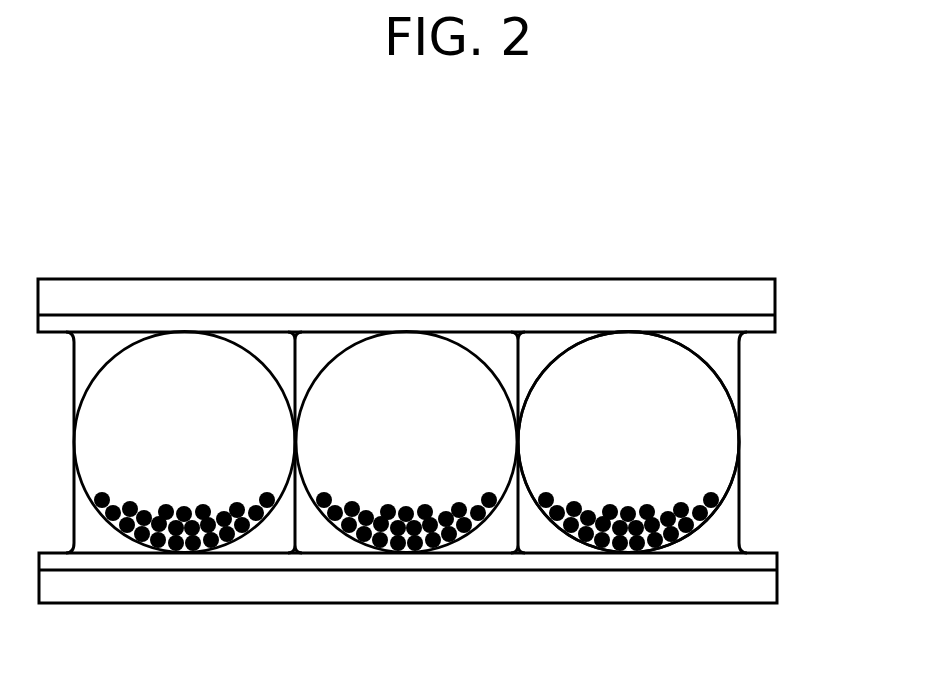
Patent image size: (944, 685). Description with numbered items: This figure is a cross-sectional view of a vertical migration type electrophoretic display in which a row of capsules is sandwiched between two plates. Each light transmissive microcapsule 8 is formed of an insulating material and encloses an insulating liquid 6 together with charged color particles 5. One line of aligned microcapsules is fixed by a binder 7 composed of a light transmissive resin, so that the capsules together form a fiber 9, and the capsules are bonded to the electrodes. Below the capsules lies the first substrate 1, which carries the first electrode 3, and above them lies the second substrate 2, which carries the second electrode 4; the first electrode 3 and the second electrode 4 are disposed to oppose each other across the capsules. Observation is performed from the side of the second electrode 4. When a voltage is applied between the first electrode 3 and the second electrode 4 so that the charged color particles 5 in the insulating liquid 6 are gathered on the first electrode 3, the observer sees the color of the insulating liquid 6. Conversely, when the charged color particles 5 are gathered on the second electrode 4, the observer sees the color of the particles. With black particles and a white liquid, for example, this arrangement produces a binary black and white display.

The first substrate 1 is at (742, 598).
The second substrate 2 is at (740, 290).
The first electrode 3 is at (768, 563).
The second electrode 4 is at (770, 325).
The charged color particles 5 is at (683, 500).
The insulating liquid 6 is at (727, 442).
The binder 7 is at (727, 367).
The light transmissive microcapsule 8 is at (562, 353).
The fiber 9 is at (742, 528).